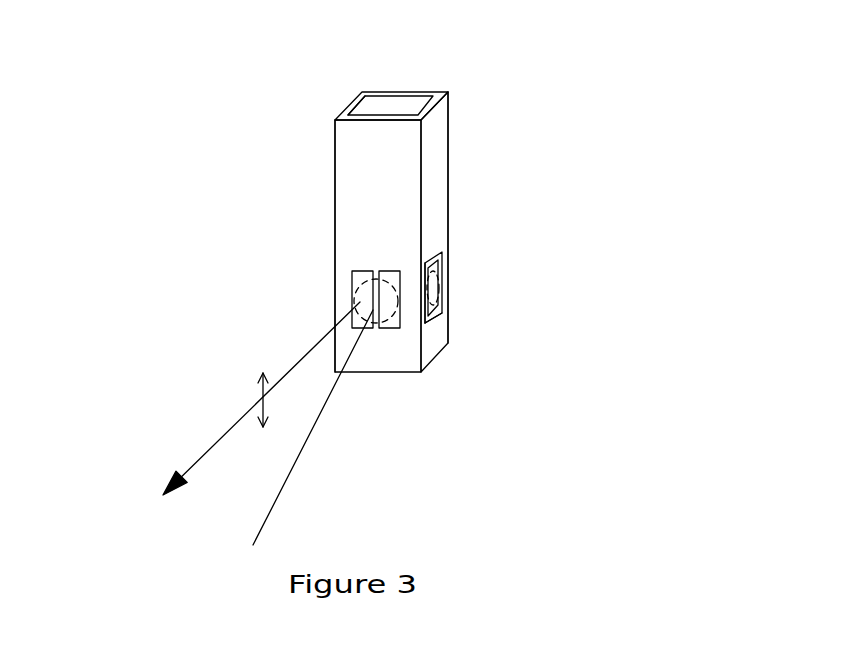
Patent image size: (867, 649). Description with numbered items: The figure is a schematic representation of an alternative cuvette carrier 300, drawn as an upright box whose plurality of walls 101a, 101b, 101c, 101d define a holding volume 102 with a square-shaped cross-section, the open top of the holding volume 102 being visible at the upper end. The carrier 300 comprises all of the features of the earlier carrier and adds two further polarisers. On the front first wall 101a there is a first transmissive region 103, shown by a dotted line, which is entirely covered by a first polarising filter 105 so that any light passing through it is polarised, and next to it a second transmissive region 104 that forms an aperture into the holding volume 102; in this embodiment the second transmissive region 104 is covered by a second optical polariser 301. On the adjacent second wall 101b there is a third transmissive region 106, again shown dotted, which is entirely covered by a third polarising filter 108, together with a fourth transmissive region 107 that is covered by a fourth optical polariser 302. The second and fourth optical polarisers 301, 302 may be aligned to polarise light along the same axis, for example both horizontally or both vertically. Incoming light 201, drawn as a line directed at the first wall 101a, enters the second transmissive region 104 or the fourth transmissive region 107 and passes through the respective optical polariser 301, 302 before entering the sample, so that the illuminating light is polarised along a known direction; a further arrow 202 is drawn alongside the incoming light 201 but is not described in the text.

The cuvette carrier 300 is at (195, 178).
The first wall 101a is at (362, 227).
The second wall 101b is at (443, 195).
The wall 101c is at (420, 91).
The wall 101d is at (354, 106).
The holding volume 102 is at (431, 106).
The first transmissive region 103 is at (364, 306).
The second transmissive region 104 is at (425, 322).
The first polarising filter 105 is at (360, 284).
The third transmissive region 106 is at (440, 300).
The fourth transmissive region 107 is at (441, 284).
The third polarising filter 108 is at (434, 313).
The incoming light 201 is at (290, 477).
The direction of movement 202 is at (224, 436).
The second optical polariser 301 is at (392, 302).
The fourth optical polariser 302 is at (443, 255).